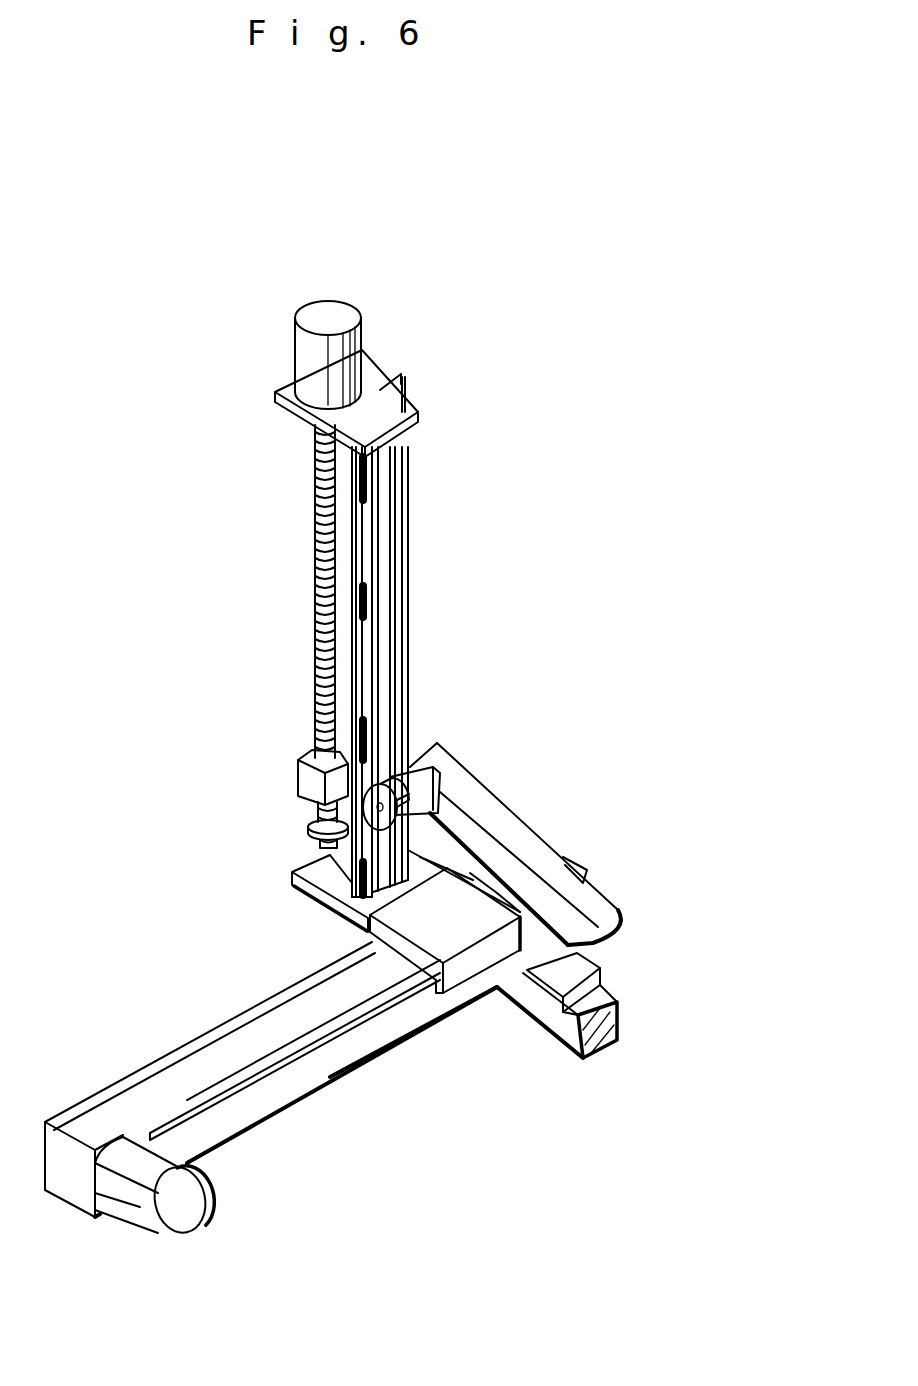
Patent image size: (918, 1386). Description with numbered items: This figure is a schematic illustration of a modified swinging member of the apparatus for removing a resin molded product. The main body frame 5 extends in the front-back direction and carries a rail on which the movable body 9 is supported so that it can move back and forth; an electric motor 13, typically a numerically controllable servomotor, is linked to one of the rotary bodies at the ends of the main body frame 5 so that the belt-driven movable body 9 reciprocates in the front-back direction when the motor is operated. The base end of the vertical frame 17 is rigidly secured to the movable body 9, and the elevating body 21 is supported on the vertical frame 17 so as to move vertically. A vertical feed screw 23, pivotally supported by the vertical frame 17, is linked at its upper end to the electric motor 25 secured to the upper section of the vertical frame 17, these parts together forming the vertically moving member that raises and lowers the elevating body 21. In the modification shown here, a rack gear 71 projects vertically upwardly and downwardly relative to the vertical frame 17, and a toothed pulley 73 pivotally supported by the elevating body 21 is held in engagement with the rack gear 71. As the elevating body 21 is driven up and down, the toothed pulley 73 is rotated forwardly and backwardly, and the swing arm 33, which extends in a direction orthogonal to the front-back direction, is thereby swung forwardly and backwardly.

The electric motor 25 is at (332, 370).
The rack gear 71 is at (362, 537).
The vertical frame 17 is at (407, 593).
The vertical feed screw 23 is at (317, 597).
The elevating body 21 is at (313, 790).
The toothed pulley 73 is at (310, 832).
The swing arm 33 is at (510, 853).
The movable body 9 is at (438, 922).
The main body frame 5 is at (563, 1032).
The electric motor 13 is at (158, 1225).